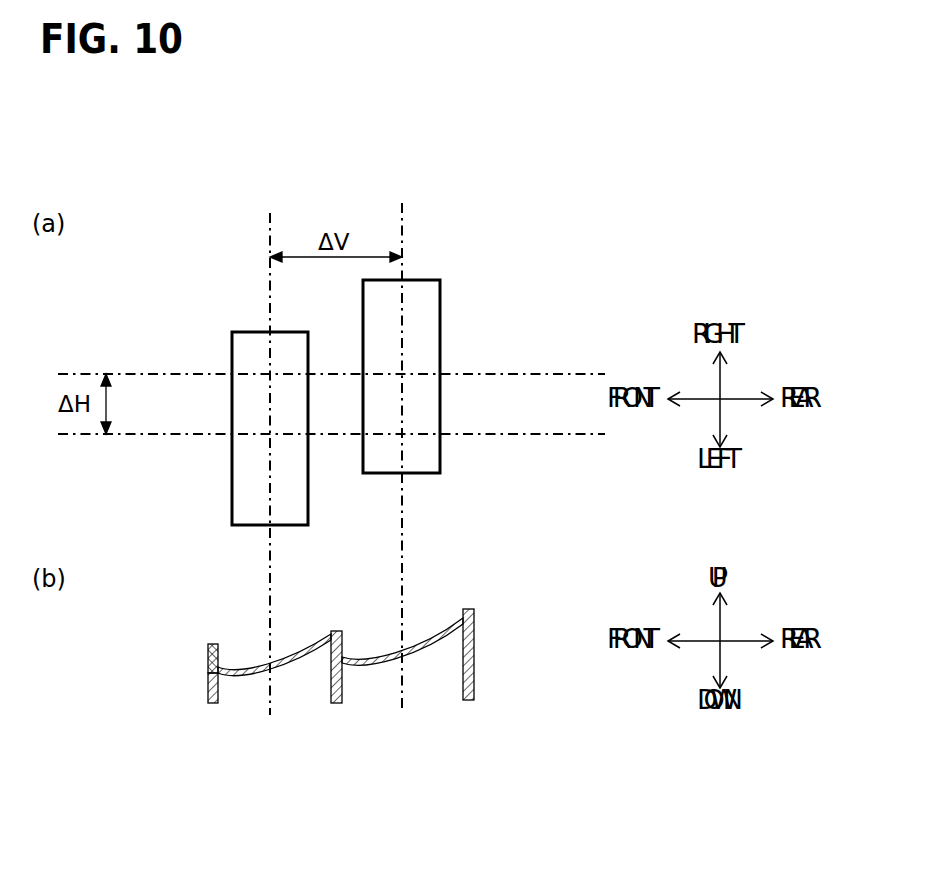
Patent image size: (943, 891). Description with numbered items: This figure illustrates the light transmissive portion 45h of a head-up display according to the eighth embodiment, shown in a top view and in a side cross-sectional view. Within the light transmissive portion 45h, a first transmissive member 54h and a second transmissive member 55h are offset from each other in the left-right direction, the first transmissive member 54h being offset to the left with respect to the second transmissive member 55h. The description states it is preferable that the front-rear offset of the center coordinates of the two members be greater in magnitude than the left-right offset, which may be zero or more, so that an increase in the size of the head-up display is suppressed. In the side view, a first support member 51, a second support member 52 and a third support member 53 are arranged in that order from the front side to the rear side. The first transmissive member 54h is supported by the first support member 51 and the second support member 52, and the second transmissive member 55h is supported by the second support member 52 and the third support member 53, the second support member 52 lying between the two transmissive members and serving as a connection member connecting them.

The light transmissive portion 45h is at (532, 271).
The first transmissive member 54h is at (245, 473).
The second transmissive member 55h is at (428, 316).
The first support member 51 is at (210, 644).
The second support member 52 is at (337, 631).
The third support member 53 is at (469, 609).